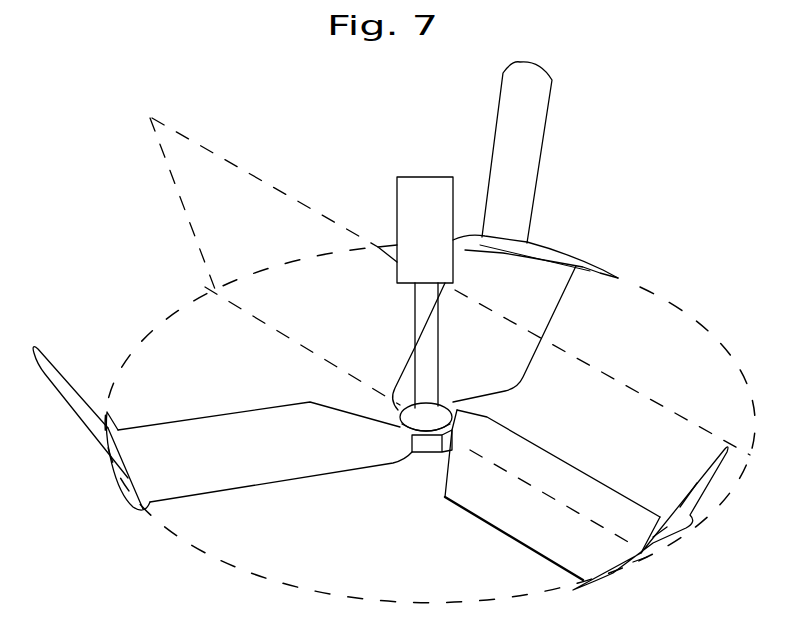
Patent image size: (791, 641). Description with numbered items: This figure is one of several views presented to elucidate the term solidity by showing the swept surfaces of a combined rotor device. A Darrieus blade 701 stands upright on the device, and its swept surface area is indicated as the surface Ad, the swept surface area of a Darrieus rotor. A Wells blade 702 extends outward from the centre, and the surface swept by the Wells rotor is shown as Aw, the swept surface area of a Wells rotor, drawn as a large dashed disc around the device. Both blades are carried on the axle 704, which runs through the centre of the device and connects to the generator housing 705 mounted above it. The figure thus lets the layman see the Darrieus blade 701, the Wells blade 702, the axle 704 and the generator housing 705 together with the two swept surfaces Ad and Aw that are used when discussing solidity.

The Darrieus blade 701 is at (525, 145).
The Wells blade 702 is at (238, 478).
The axle 704 is at (428, 325).
The generator housing 705 is at (435, 188).
The swept surface area of a Darrieus rotor Ad is at (185, 212).
The swept surface area of a Wells rotor Aw is at (133, 348).